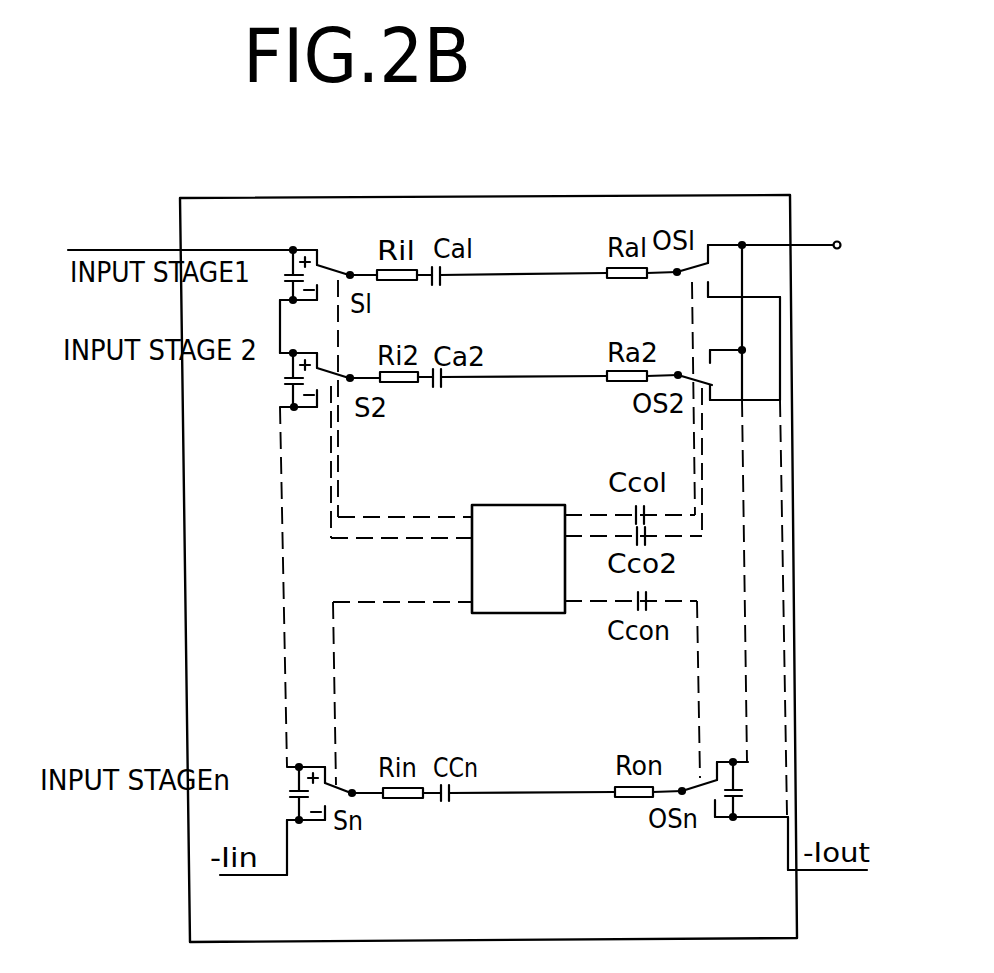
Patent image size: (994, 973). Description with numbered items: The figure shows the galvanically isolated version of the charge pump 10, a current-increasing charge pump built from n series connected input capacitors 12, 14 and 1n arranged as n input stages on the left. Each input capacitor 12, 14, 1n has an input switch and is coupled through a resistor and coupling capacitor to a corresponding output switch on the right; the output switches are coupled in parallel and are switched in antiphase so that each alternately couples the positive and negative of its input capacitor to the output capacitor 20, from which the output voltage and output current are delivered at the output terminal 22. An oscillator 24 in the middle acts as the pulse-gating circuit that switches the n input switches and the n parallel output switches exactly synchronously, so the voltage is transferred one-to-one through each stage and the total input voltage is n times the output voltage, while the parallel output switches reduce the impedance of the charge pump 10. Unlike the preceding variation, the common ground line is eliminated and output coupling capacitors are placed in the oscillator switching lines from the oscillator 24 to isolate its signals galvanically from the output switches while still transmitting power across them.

The charge pump 10 is at (284, 197).
The input capacitor 12 is at (290, 280).
The input capacitor 14 is at (286, 386).
The input capacitor 1n is at (296, 796).
The output capacitor 20 is at (731, 798).
The output terminal 22 is at (780, 229).
The oscillator 24 is at (508, 505).